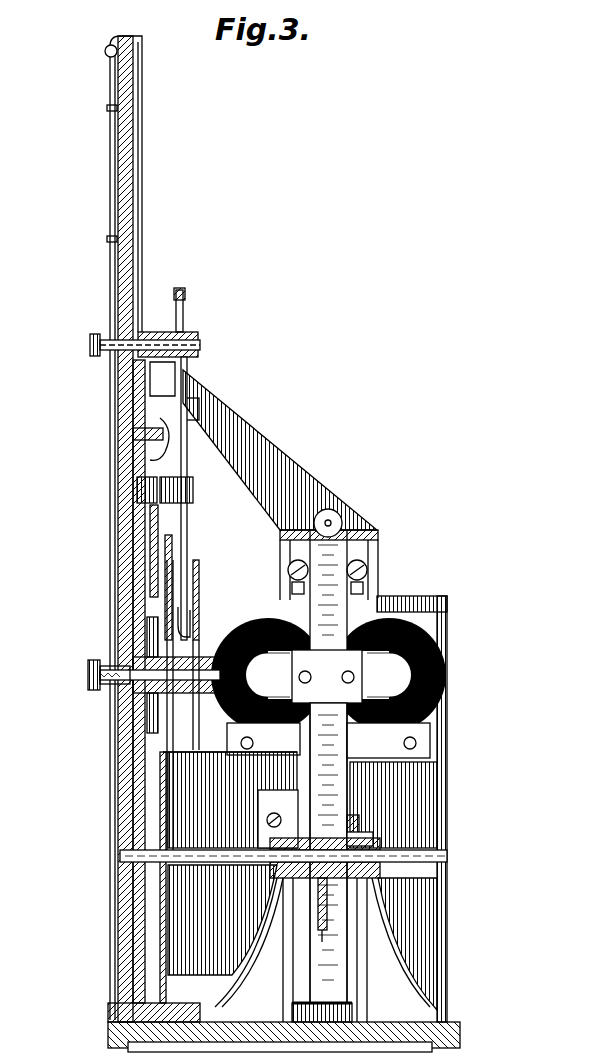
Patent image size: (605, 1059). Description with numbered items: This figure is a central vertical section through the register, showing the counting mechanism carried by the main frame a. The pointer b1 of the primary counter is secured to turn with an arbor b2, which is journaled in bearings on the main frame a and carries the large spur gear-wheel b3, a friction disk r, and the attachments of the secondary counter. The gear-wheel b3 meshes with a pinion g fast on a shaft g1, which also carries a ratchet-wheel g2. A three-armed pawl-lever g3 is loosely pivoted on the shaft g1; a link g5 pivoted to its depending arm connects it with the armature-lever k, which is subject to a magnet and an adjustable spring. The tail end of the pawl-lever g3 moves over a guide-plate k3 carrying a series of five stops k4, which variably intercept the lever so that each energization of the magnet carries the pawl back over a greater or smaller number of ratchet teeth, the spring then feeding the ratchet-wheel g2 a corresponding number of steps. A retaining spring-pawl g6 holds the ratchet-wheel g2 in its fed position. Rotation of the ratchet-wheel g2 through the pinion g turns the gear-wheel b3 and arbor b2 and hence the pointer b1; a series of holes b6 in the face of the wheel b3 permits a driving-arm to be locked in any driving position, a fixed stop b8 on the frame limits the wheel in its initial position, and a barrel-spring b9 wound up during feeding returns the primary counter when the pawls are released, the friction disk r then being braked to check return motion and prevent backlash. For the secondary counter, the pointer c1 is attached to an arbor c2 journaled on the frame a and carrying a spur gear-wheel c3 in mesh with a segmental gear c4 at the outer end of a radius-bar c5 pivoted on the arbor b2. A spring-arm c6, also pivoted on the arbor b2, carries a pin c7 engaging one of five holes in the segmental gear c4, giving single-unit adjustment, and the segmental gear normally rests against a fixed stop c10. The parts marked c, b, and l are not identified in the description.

The main frame a is at (135, 186).
The vertical rod c is at (110, 206).
The pointer of the secondary counter c1 is at (98, 352).
The arbor c2 is at (200, 350).
The spur gear-wheel c3 is at (185, 304).
The segmental gear c4 is at (195, 410).
The radius-bar c5 is at (200, 456).
The spring-arm c6 is at (210, 470).
The pin c7 is at (150, 468).
The fixed stop c10 is at (150, 515).
The fixed stop b8 is at (160, 545).
The series of holes b6 is at (172, 558).
The main spur gear-wheel b3 is at (199, 590).
The friction disk r is at (200, 642).
The armature cross piece l is at (318, 684).
The arbor b2 is at (88, 677).
The pointer of the primary counter b1 is at (94, 690).
The barrel-spring b9 is at (150, 738).
The pinion g is at (150, 882).
The base b is at (110, 960).
The shaft g1 is at (250, 858).
The ratchet-wheel g2 is at (323, 944).
The armature-lever k is at (392, 760).
The retaining spring-pawl g6 is at (335, 780).
The guide-plate k3 is at (358, 822).
The stops k4 is at (362, 838).
The three-armed pawl-lever g3 is at (372, 885).
The link g5 is at (355, 905).